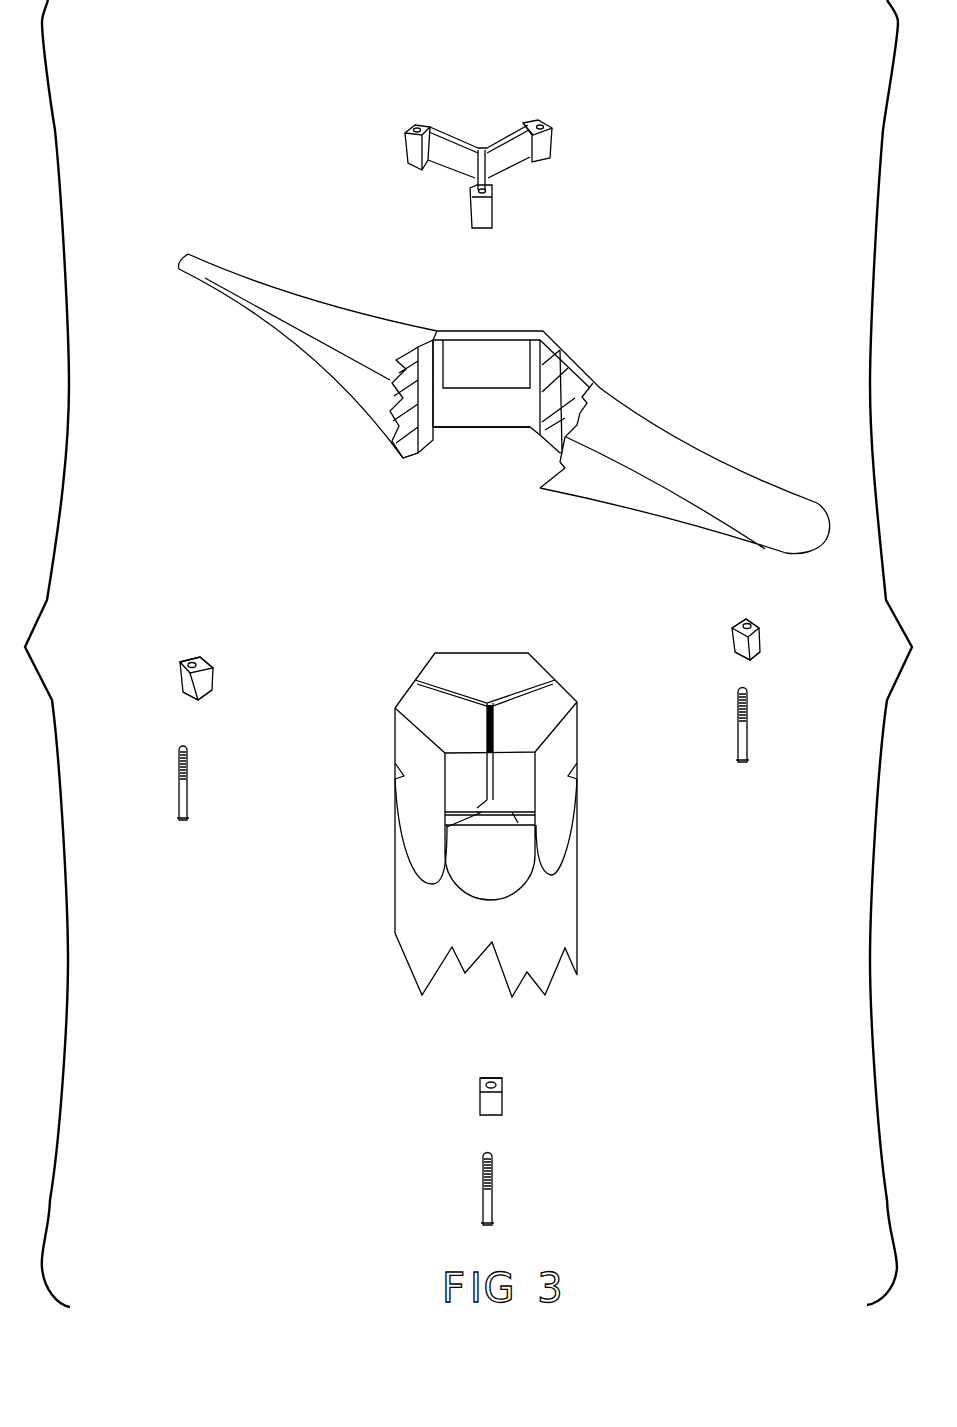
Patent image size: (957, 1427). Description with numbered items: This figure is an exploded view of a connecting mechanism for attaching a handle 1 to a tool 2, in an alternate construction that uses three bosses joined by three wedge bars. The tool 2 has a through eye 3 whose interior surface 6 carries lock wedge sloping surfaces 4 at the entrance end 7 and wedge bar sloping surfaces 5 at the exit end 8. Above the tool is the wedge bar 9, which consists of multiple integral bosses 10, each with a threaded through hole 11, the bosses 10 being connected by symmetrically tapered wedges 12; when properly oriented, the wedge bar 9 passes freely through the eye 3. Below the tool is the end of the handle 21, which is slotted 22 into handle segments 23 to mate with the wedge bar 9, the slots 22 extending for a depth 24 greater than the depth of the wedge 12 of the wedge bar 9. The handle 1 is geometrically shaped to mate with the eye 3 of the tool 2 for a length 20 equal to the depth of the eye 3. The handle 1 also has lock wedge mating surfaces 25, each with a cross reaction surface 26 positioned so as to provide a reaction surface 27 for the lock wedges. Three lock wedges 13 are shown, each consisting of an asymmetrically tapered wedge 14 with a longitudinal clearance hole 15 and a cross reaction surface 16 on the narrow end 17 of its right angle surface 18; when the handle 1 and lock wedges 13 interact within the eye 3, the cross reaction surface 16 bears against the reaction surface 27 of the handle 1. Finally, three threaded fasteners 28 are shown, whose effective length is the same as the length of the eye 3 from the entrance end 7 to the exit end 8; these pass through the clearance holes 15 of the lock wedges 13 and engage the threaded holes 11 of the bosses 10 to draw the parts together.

The handle 1 is at (580, 950).
The tool 2 is at (662, 425).
The through eye 3 is at (488, 455).
The lock wedge sloping surfaces 4 is at (548, 425).
The wedge bar sloping surfaces 5 is at (497, 358).
The interior surface 6 is at (467, 408).
The entrance end 7 is at (548, 490).
The exit end 8 is at (478, 320).
The wedge bar 9 is at (578, 171).
The bosses 10 is at (420, 118).
The threaded through hole 11 is at (405, 127).
The symmetrically tapered wedges 12 is at (500, 130).
The lock wedge 13 is at (183, 698).
The asymmetrically tapered wedge 14 is at (180, 678).
The longitudinal clearance hole 15 is at (188, 657).
The cross reaction surface 16 is at (210, 668).
The narrow end 17 is at (200, 652).
The right angle surface 18 is at (207, 695).
The length 20 is at (585, 830).
The end of the handle 21 is at (498, 645).
The slots 22 is at (417, 680).
The handle segments 23 is at (458, 668).
The depth 24 is at (452, 825).
The lock wedge mating surfaces 25 is at (480, 875).
The cross reaction surface 26 is at (395, 790).
The reaction surface 27 is at (580, 767).
The threaded fasteners 28 is at (172, 805).